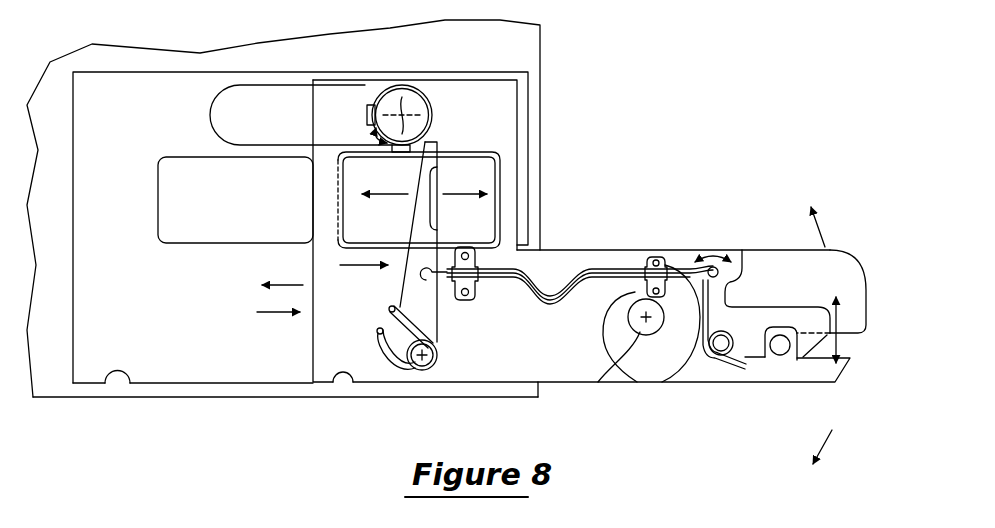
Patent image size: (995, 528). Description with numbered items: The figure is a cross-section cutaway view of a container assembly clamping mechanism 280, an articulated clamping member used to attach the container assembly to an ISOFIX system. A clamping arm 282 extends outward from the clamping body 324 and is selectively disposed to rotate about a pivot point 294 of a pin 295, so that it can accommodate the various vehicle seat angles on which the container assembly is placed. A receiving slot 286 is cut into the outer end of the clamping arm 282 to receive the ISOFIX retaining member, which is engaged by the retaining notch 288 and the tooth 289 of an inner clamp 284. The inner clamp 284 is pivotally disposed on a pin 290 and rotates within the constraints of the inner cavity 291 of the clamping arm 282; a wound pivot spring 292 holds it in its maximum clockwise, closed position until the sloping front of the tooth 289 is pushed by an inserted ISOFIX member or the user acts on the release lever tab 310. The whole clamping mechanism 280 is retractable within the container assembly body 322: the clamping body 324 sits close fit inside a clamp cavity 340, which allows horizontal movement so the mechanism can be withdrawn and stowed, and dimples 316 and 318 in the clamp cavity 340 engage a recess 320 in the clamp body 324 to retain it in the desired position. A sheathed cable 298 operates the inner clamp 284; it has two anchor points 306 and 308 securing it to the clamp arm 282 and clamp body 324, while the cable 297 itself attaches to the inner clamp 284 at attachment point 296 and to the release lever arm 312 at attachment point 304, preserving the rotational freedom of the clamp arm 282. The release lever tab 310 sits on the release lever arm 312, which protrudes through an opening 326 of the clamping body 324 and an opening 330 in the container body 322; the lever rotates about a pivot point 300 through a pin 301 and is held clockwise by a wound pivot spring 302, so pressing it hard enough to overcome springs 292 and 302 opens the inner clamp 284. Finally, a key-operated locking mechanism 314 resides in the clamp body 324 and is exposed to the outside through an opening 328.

The clamping mechanism 280 is at (570, 161).
The clamping arm 282 is at (840, 250).
The inner clamp 284 is at (768, 307).
The receiving slot 286 is at (857, 349).
The retaining notch 288 is at (780, 347).
The tooth 289 is at (815, 358).
The pin 290 is at (712, 355).
The inner cavity 291 is at (842, 284).
The wound pivot spring 292 is at (723, 362).
The pivot point 294 is at (648, 322).
The pin 295 is at (598, 382).
The attachment point 296 is at (742, 250).
The cable 297 is at (592, 270).
The sheathed cable 298 is at (572, 304).
The pivot point 300 is at (424, 371).
The pin 301 is at (432, 350).
The wound pivot spring 302 is at (395, 362).
The attachment point 304 is at (428, 293).
The anchor point 306 is at (478, 301).
The anchor point 308 is at (650, 257).
The release lever tab 310 is at (440, 217).
The release lever arm 312 is at (413, 217).
The locking mechanism 314 is at (432, 113).
The dimple 316 is at (117, 371).
The dimple 318 is at (342, 385).
The recess 320 is at (338, 378).
The container assembly body 322 is at (61, 352).
The clamping body 324 is at (365, 300).
The opening 326 is at (382, 187).
The opening 328 is at (270, 124).
The opening 330 is at (227, 220).
The clamp cavity 340 is at (150, 297).